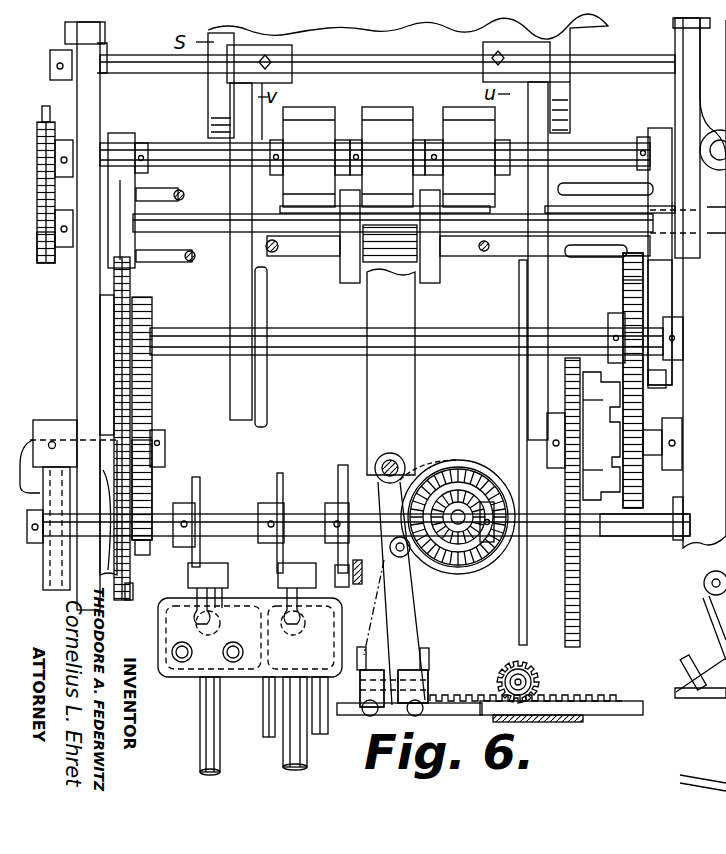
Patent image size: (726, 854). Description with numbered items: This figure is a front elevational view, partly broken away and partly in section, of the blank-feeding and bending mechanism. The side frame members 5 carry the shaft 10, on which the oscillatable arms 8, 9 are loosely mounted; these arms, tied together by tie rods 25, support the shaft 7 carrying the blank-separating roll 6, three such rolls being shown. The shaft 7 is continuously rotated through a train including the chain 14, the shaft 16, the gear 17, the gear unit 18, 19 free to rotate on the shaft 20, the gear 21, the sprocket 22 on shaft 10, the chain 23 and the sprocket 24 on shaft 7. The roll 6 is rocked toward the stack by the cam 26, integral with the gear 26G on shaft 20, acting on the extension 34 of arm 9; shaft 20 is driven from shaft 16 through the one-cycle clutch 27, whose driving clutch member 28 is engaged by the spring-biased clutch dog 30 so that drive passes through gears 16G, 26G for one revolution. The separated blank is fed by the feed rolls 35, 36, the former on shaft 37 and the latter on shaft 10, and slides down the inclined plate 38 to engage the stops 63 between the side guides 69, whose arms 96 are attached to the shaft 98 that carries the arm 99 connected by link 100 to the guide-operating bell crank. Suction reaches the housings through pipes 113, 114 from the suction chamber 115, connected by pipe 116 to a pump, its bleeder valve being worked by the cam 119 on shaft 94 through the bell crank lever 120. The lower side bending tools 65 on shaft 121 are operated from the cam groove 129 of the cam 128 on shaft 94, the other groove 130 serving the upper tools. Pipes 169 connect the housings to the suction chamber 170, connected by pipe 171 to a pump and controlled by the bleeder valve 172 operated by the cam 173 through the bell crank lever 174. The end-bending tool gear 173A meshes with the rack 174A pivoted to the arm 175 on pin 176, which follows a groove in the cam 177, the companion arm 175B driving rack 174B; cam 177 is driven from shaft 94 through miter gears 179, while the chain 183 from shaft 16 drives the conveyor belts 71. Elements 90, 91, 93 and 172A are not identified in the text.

The frame member 5 is at (92, 106).
The blank-separating roll 6 is at (300, 112).
The shaft 7 is at (158, 156).
The oscillatable arm 8 is at (122, 140).
The oscillatable arm 9 is at (656, 132).
The shaft 10 is at (184, 228).
The chain 14 is at (577, 592).
The shaft 16 is at (433, 440).
The gear 16G is at (637, 468).
The gear 17 is at (152, 413).
The gear unit 18 is at (152, 309).
The gear unit 19 is at (130, 284).
The shaft 20 is at (198, 330).
The gear 21 is at (110, 289).
The sprocket 22 is at (45, 254).
The chain 23 is at (38, 207).
The sprocket 24 is at (47, 120).
The tie rod 25 is at (171, 196).
The cam 26 is at (645, 411).
The gear 26G is at (628, 282).
The one-cycle clutch 27 is at (590, 464).
The driving clutch member 28 is at (590, 407).
The clutch pawl or dog 30 is at (610, 373).
The extension 34 is at (660, 298).
The feed roll 35 is at (347, 265).
The feed roll 36 is at (463, 206).
The shaft 37 is at (490, 246).
The inclined plate 38 is at (418, 378).
The stop 63 is at (358, 672).
The lower side bending tool 65 is at (703, 612).
The side guide 69 is at (270, 317).
The conveyor belt 71 is at (686, 698).
The block 90 is at (427, 590).
The collar 91 is at (333, 566).
The arm 93 is at (340, 481).
The shaft 94 is at (657, 523).
The arm 96 is at (245, 251).
The shaft 98 is at (590, 58).
The arm 99 is at (716, 186).
The link 100 is at (712, 144).
The pipe 113 is at (183, 663).
The pipe 114 is at (234, 663).
The suction chamber 115 is at (160, 615).
The pipe 116 is at (204, 760).
The cam 119 is at (200, 487).
The bell crank lever 120 is at (190, 581).
The shaft 121 is at (704, 584).
The cam 128 is at (28, 430).
The cam groove 129 is at (65, 518).
The cam groove 130 is at (58, 577).
The pipe 169 is at (266, 731).
The suction chamber 170 is at (377, 608).
The pipe 171 is at (290, 766).
The bleeder valve 172 is at (301, 638).
The pinion 172A is at (540, 680).
The cam 173 is at (275, 483).
The gear 173A is at (428, 660).
The bell crank lever 174 is at (278, 586).
The rack 174A is at (605, 708).
The rack 174B is at (397, 718).
The arm 175 is at (417, 622).
The arm 175B is at (407, 637).
The pin 176 is at (390, 452).
The cam 177 is at (465, 584).
The miter gears 179 is at (477, 484).
The chain 183 is at (128, 567).